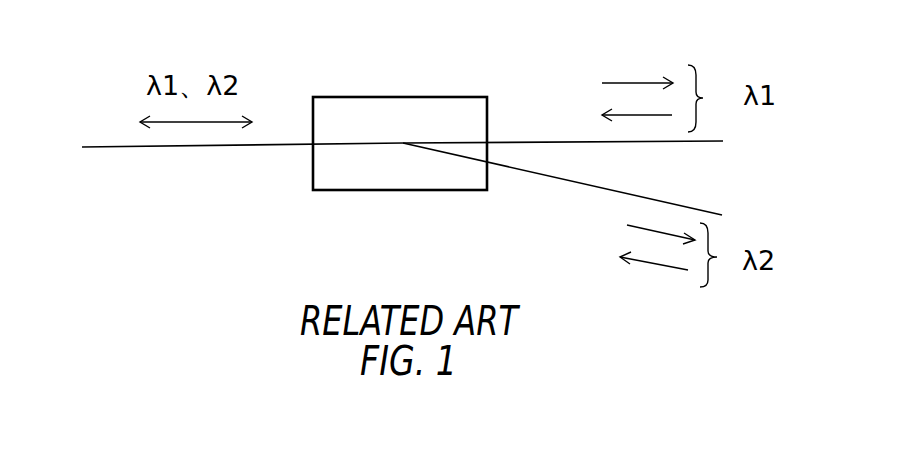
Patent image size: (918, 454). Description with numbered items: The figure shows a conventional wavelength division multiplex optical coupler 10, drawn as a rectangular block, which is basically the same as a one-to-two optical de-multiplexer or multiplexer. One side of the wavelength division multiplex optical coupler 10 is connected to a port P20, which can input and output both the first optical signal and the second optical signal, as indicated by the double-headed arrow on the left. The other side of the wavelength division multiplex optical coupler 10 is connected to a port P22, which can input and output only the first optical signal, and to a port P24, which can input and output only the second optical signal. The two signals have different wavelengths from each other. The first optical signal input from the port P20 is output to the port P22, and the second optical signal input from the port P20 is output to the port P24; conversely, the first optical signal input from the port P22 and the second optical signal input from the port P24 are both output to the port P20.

The wavelength division multiplex optical coupler 10 is at (400, 97).
The port P20 is at (217, 147).
The port P22 is at (598, 142).
The port P24 is at (595, 187).